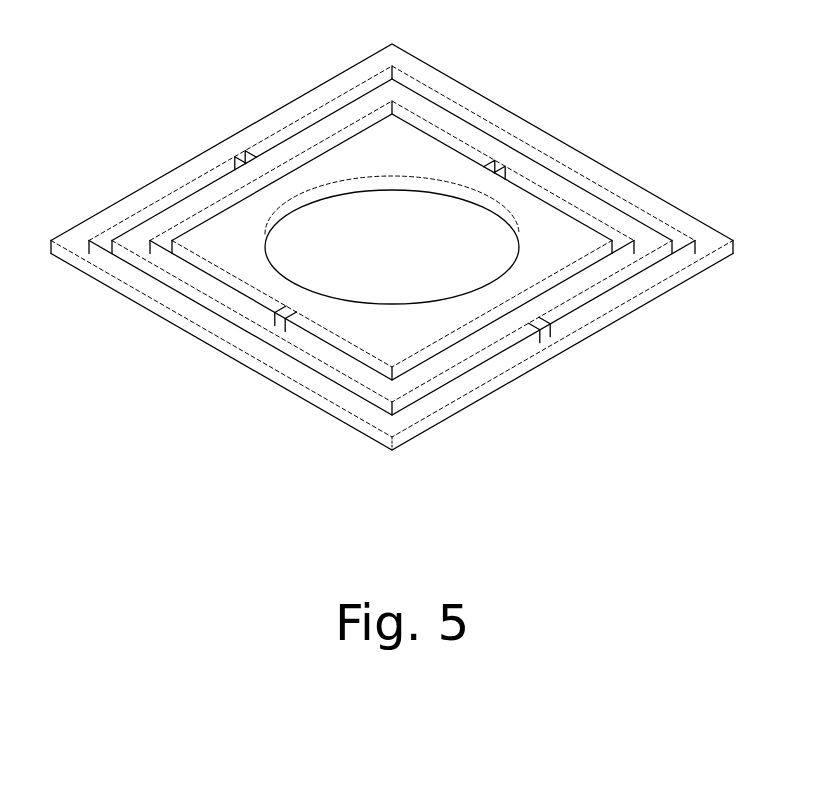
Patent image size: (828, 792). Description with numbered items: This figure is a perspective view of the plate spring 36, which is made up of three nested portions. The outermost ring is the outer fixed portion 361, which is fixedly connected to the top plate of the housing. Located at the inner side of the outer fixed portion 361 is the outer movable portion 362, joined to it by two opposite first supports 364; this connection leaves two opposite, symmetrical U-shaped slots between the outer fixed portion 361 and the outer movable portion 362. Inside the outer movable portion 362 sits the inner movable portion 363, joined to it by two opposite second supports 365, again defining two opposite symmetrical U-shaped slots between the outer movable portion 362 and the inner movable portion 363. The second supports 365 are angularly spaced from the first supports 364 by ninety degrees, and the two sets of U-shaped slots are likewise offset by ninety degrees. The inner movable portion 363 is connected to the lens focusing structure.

The plate spring 36 is at (250, 112).
The outer fixed portion 361 is at (190, 336).
The outer movable portion 362 is at (455, 118).
The inner movable portion 363 is at (535, 225).
The first supports 364 is at (243, 156).
The second supports 365 is at (500, 163).